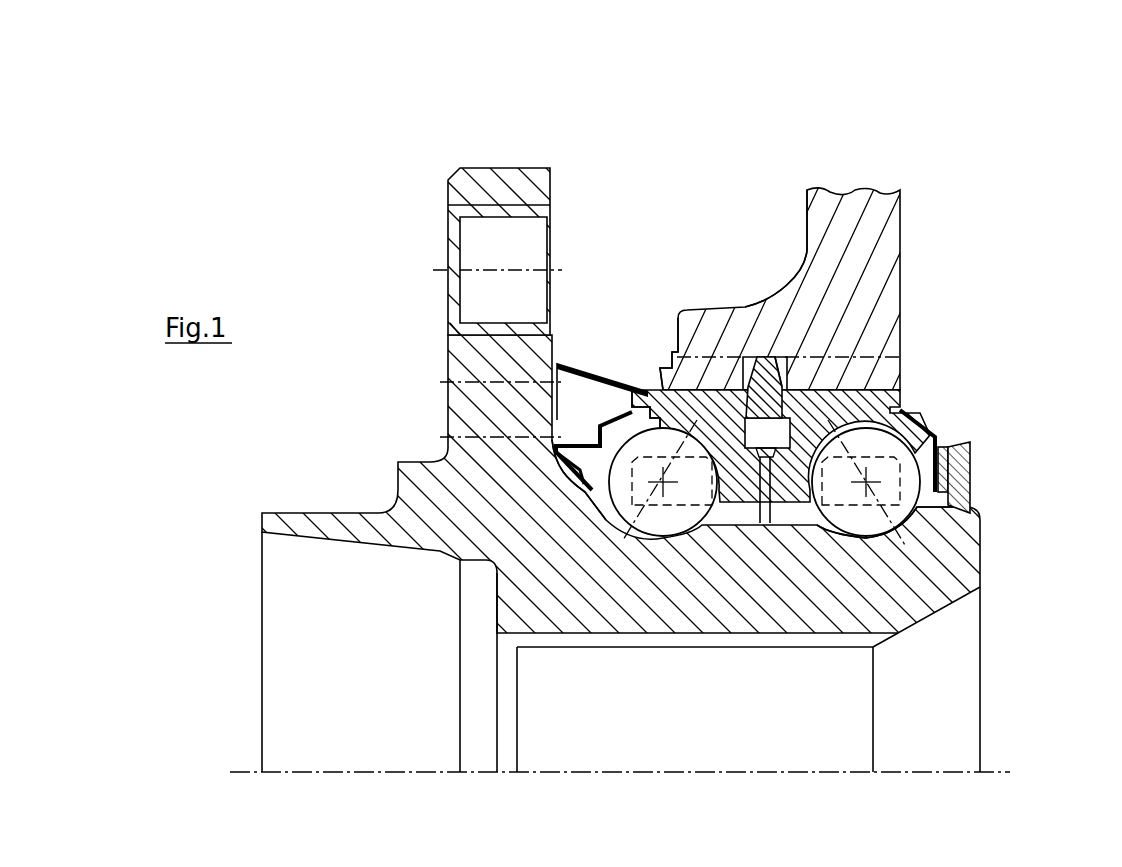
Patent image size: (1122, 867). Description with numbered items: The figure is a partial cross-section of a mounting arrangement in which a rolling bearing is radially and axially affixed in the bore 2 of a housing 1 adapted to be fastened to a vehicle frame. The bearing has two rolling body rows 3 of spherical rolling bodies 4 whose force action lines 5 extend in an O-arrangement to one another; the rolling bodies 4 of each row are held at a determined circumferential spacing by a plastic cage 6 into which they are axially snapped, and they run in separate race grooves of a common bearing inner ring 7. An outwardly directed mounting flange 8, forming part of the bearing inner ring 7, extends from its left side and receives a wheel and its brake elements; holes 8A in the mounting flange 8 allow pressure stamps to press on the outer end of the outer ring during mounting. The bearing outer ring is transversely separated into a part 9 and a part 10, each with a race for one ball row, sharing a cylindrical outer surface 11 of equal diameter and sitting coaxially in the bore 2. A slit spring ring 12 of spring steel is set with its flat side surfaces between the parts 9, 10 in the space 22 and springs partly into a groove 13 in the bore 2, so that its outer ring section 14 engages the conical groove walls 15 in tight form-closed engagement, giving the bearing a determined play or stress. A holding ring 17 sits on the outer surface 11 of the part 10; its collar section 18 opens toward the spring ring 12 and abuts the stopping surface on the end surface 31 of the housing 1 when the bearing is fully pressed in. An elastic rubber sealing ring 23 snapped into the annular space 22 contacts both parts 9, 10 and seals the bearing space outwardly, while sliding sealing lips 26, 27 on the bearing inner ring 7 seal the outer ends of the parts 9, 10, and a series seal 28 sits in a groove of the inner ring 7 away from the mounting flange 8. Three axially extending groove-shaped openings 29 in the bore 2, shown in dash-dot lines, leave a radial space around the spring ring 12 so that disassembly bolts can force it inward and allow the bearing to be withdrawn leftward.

The housing 1 is at (883, 220).
The bore 2 is at (902, 407).
The rolling body row 3 is at (852, 542).
The rolling bodies 4 is at (905, 550).
The force action lines 5 is at (652, 478).
The plastic cage 6 is at (562, 568).
The bearing inner ring 7 is at (905, 595).
The mounting flange 8 is at (462, 195).
The holes 8A is at (526, 480).
The part of bearing outer ring 9 is at (875, 390).
The part of bearing outer ring 10 is at (711, 383).
The cylindrical outer surface 11 is at (858, 348).
The spring ring 12 is at (729, 352).
The groove 13 is at (781, 352).
The ring section 14 is at (759, 356).
The conical groove walls 15 is at (744, 306).
The holding ring 17 is at (560, 345).
The collar section 18 is at (660, 390).
The space 22 is at (888, 575).
The elastic sealing ring 23 is at (768, 492).
The sealing lip 26 is at (560, 487).
The sealing lip 27 is at (968, 495).
The series seal 28 is at (967, 467).
The openings 29 is at (845, 348).
The end surface 31 is at (665, 333).